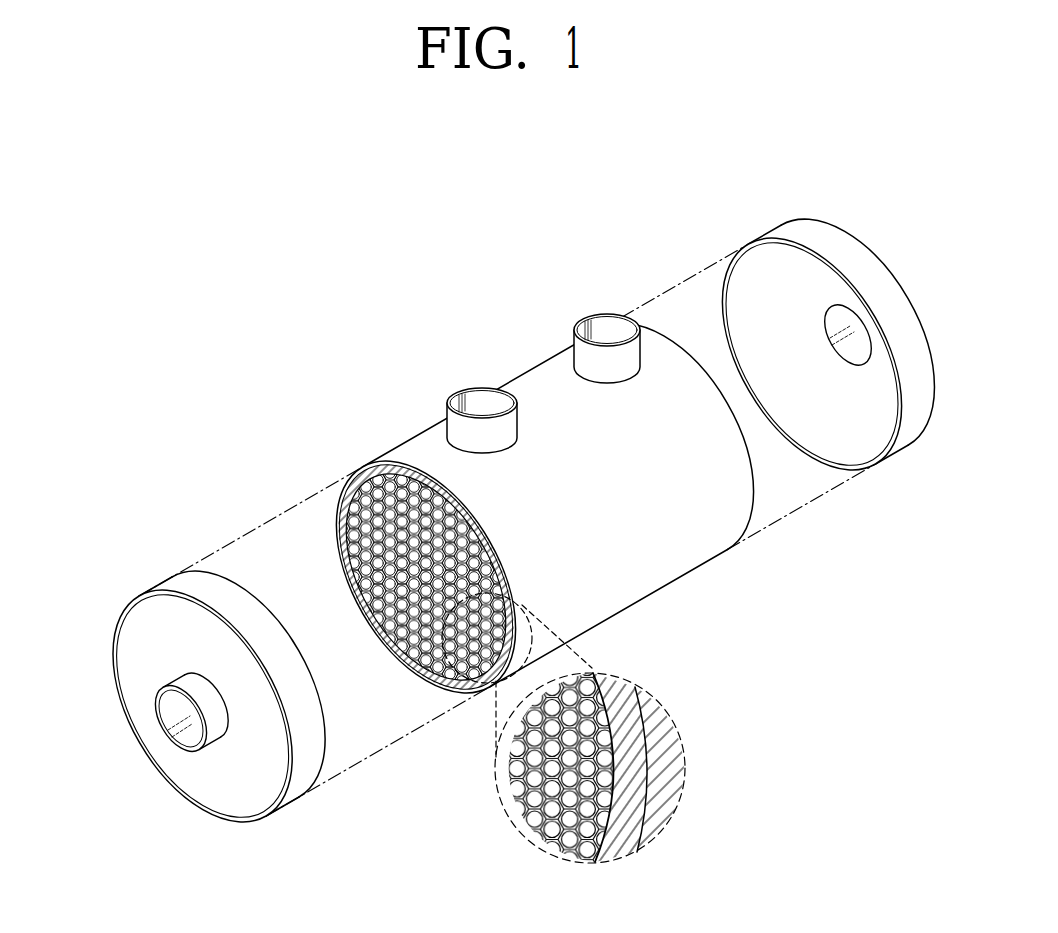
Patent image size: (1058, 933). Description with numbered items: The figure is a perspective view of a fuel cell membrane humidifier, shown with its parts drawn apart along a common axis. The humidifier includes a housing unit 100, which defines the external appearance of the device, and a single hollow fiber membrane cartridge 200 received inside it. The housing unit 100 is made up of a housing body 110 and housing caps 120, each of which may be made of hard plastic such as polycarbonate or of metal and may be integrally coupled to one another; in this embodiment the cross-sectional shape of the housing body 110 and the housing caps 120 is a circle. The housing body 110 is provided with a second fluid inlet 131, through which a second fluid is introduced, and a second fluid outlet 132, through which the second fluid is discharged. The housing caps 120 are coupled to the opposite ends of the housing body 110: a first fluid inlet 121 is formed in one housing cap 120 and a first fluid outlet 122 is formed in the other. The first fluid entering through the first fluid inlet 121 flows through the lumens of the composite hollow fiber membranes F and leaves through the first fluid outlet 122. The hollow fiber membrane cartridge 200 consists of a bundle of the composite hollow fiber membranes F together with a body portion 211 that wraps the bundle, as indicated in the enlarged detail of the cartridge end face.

The housing unit 100 is at (498, 523).
The housing body 110 is at (638, 562).
The housing cap 120 is at (776, 338).
The first fluid inlet 121 is at (840, 318).
The first fluid outlet 122 is at (170, 702).
The second fluid inlet 131 is at (478, 405).
The second fluid outlet 132 is at (606, 328).
The hollow fiber membrane cartridge 200 is at (542, 650).
The body portion 211 is at (630, 721).
The composite hollow fiber membranes F is at (570, 760).